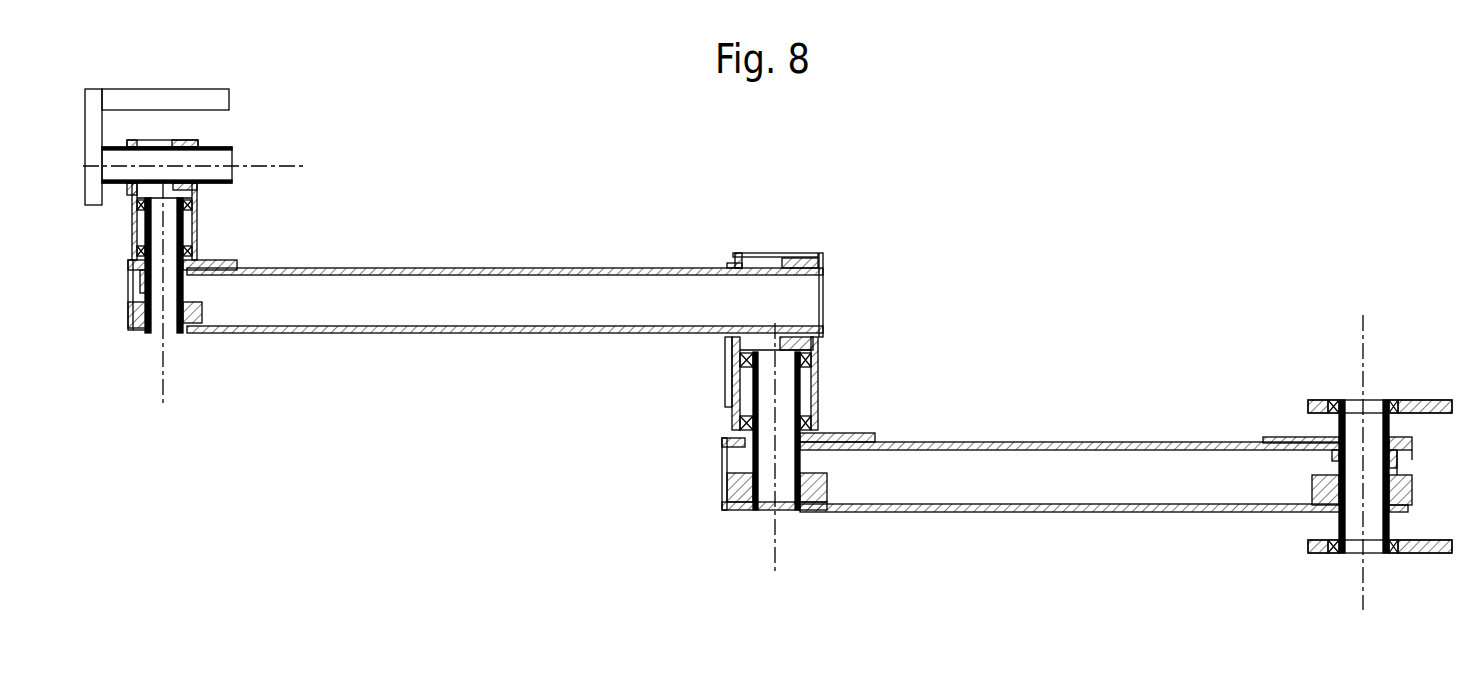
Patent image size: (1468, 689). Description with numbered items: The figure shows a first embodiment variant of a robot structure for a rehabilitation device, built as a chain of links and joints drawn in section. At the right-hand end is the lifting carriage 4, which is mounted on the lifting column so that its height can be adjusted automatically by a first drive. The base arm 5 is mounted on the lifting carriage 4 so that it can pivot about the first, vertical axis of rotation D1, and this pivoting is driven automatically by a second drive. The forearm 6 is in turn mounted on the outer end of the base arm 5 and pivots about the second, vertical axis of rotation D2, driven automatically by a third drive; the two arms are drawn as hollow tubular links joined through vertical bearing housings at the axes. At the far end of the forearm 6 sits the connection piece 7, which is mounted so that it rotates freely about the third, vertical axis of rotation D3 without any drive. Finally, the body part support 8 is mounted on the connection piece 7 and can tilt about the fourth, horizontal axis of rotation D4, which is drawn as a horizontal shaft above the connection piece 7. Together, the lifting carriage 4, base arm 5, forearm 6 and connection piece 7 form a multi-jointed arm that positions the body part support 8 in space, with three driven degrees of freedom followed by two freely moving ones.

The lifting carriage 4 is at (1420, 402).
The base arm 5 is at (1065, 442).
The forearm 6 is at (485, 268).
The connection piece 7 is at (198, 222).
The body part support 8 is at (173, 105).
The first, vertical axis of rotation D1 is at (1362, 340).
The second, vertical axis of rotation D2 is at (773, 558).
The third, vertical axis of rotation D3 is at (163, 397).
The fourth, horizontal axis of rotation D4 is at (278, 165).